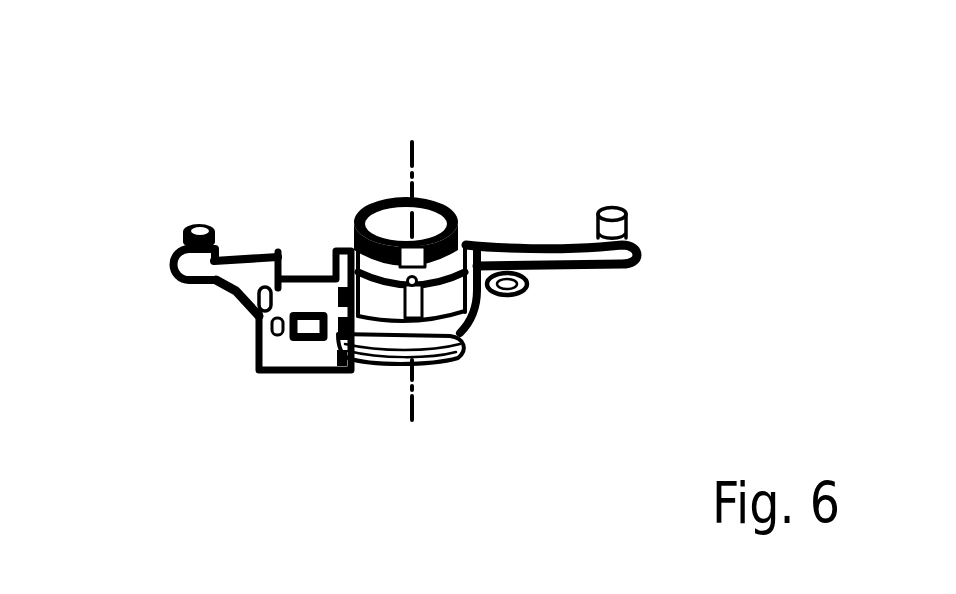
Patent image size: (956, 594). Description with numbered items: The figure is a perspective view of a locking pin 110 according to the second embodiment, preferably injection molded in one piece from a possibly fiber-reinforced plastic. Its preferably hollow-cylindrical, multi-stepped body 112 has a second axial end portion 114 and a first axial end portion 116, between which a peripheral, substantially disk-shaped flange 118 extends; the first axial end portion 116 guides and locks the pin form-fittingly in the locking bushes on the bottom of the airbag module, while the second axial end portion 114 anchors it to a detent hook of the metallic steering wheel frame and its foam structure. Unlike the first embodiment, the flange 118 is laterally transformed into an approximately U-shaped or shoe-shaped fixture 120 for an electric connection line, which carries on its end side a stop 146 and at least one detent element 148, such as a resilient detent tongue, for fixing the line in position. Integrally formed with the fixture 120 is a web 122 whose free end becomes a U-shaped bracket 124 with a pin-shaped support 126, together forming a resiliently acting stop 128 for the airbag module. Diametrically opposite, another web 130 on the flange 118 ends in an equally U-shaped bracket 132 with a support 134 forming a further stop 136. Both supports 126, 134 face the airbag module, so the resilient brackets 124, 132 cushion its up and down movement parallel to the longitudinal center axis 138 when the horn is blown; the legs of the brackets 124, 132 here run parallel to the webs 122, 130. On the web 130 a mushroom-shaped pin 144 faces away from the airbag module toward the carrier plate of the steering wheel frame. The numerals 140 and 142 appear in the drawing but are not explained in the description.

The locking pin 110 is at (572, 164).
The body 112 is at (466, 313).
The second axial end portion 114 is at (380, 198).
The first axial end portion 116 is at (470, 356).
The flange 118 is at (367, 317).
The fixture 120 is at (303, 357).
The web 122 is at (215, 288).
The U-shaped bracket 124 is at (171, 265).
The pin-shaped support 126 is at (181, 240).
The stop 128 is at (198, 224).
The web 130 is at (490, 246).
The U-shaped bracket 132 is at (644, 246).
The support 134 is at (627, 226).
The stop 136 is at (618, 192).
The longitudinal center axis 138 is at (410, 152).
The bracket arm 140 is at (238, 250).
The strip arm 142 is at (530, 236).
The mushroom-shaped pin 144 is at (528, 290).
The stop 146 is at (313, 273).
The detent element 148 is at (307, 323).